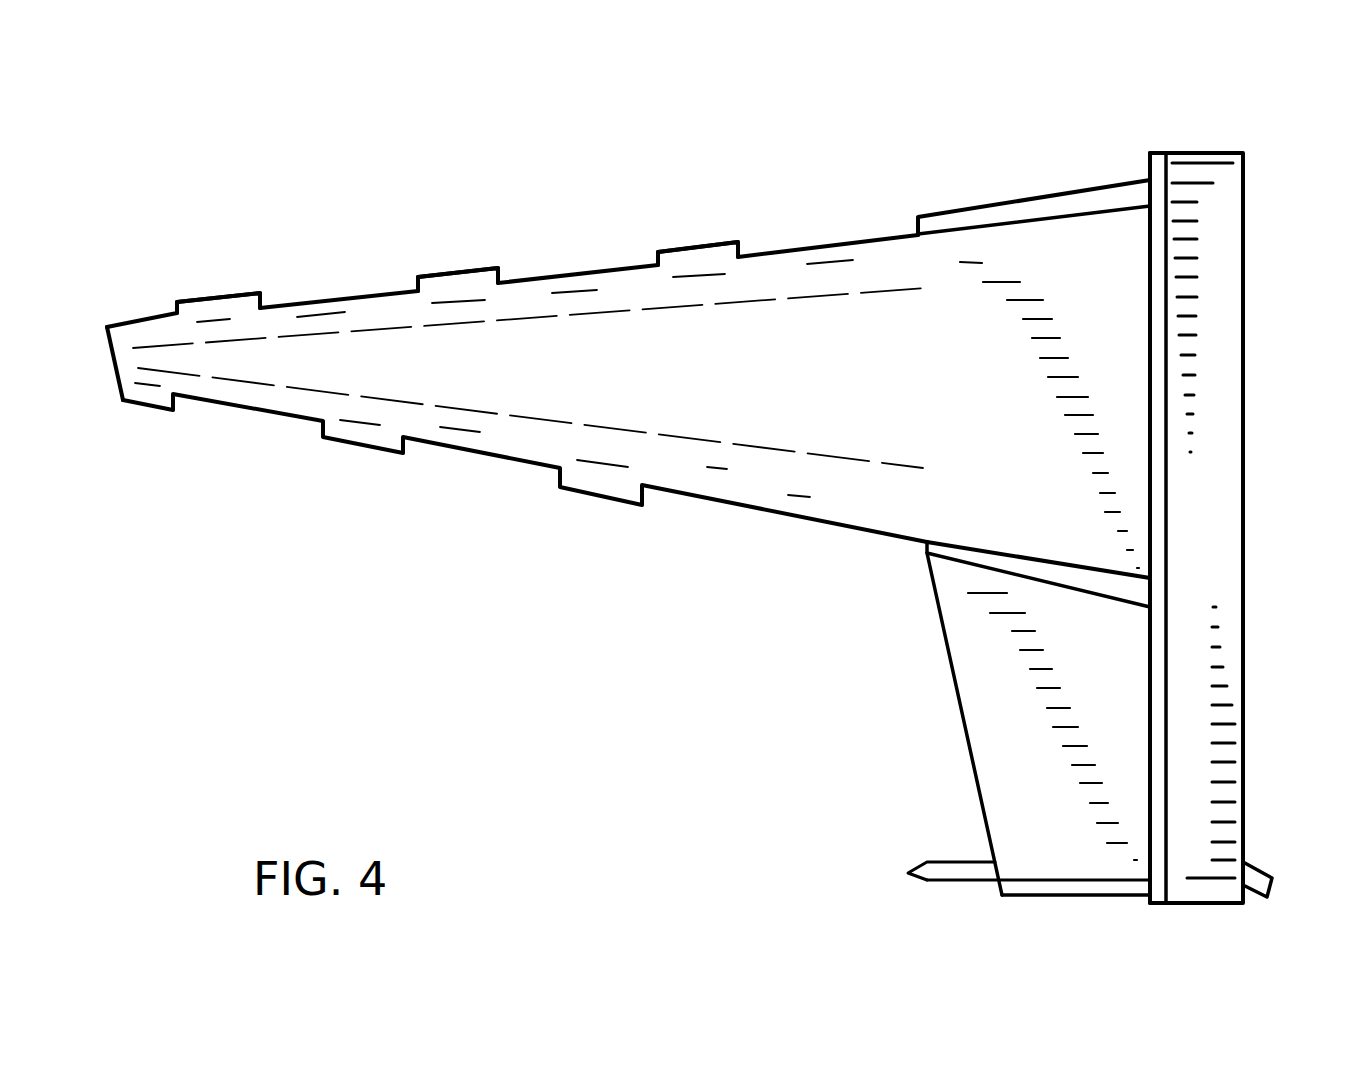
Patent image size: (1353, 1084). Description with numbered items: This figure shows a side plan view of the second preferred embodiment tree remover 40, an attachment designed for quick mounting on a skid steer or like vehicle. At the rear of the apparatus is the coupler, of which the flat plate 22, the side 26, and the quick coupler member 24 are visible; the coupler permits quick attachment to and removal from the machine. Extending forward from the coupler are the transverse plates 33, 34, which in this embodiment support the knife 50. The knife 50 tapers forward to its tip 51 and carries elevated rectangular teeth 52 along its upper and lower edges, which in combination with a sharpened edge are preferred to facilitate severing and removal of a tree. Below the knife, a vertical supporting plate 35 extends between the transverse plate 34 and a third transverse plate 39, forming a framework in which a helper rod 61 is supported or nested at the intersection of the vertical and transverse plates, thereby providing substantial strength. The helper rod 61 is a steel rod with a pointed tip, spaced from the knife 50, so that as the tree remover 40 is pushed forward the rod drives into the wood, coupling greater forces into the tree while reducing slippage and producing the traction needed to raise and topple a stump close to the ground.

The tree remover 40 is at (178, 88).
The knife 50 is at (712, 507).
The tip end 51 is at (127, 358).
The rectangular teeth 52 is at (687, 248).
The transverse plate 33 is at (962, 220).
The transverse plate 34 is at (930, 547).
The vertical supporting plate 35 is at (970, 663).
The helper rod 61 is at (921, 868).
The third transverse plate 39 is at (1023, 890).
The flat plate 22 is at (1160, 172).
The side 26 is at (1230, 546).
The quick coupler member 24 is at (1262, 878).